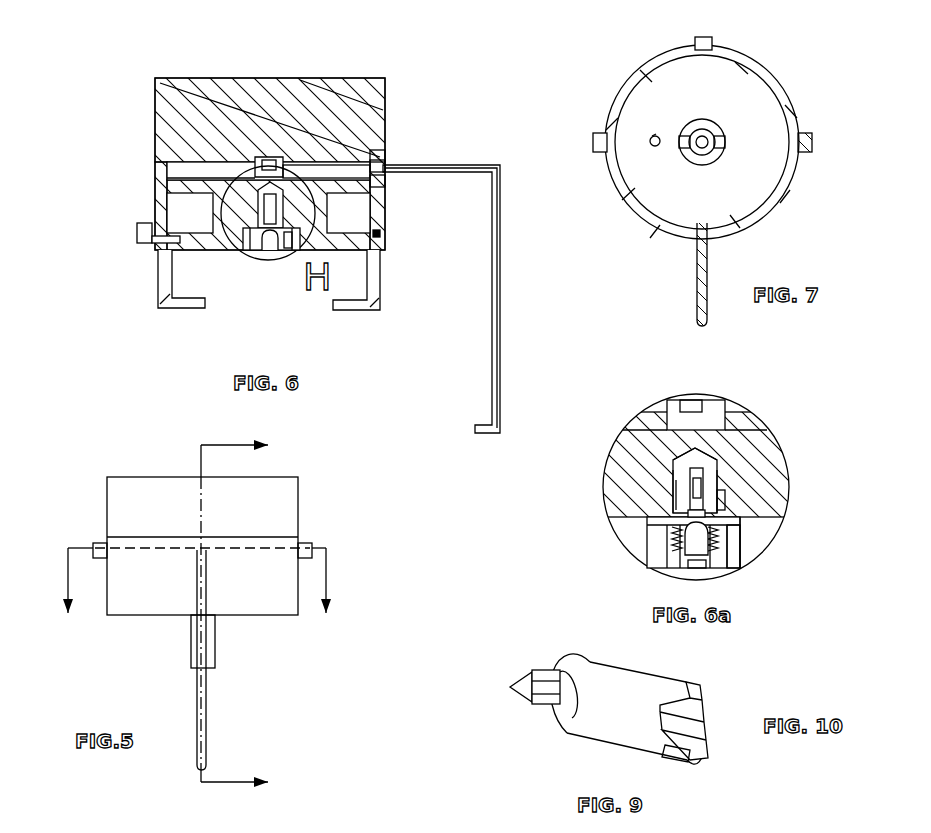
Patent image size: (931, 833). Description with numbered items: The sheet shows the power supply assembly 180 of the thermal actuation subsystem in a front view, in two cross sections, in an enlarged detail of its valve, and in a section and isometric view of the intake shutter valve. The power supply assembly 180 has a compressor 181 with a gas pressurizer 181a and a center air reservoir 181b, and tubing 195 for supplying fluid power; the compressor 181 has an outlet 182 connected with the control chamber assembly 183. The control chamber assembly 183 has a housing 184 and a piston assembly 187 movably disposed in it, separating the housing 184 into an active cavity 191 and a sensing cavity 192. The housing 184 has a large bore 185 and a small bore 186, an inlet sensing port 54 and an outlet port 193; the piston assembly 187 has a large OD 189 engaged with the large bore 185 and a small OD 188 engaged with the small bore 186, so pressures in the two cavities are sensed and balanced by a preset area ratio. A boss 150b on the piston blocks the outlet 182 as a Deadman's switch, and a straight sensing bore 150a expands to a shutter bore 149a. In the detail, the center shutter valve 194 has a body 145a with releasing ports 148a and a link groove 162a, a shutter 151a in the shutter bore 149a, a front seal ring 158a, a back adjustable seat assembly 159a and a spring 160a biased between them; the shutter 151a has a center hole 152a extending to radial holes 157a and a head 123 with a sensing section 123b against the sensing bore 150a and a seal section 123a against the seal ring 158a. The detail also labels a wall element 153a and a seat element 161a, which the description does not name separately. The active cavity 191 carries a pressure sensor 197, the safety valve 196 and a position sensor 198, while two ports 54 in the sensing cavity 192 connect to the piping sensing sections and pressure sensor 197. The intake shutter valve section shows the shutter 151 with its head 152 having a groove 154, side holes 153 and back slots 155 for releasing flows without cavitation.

In FIG. 6, the inlet sensing port 54 is at (173, 238).
In FIG. 6a, the head 123 is at (700, 458).
In FIG. 6a, the seal section 123a is at (705, 470).
In FIG. 6a, the sensing section 123b is at (693, 458).
In FIG. 6a, the body 145a is at (746, 550).
In FIG. 6a, the releasing ports 148a is at (724, 565).
In FIG. 6a, the shutter bore 149a is at (676, 495).
In FIG. 6a, the straight pattern sensing bore 150a is at (710, 460).
In FIG. 6, the boss 150b is at (250, 167).
In FIG. 6a, the boss 150b is at (720, 402).
In FIG. 9, the shutter 151 is at (600, 740).
In FIG. 6a, the shutter 151a is at (722, 500).
In FIG. 9, the head 152 is at (545, 705).
In FIG. 6a, the center hole 152a is at (717, 495).
In FIG. 9, the side holes 153 is at (572, 680).
In FIG. 6a, the housing side wall 153a is at (745, 523).
In FIG. 9, the groove 154 is at (540, 688).
In FIG. 9, the back slots 155 is at (673, 752).
In FIG. 6a, the radial holes 157a is at (698, 483).
In FIG. 6a, the front seal ring 158a is at (673, 460).
In FIG. 6a, the back adjustable seat assembly 159a is at (676, 520).
In FIG. 6a, the spring 160a is at (668, 543).
In FIG. 6a, the bottom plate 161a is at (685, 560).
In FIG. 6a, the link groove 162a is at (733, 548).
In FIG. 6, the power supply assembly 180 is at (272, 68).
In FIG. 5, the power supply assembly 180 is at (140, 462).
In FIG. 6, the compressor 181 is at (195, 120).
In FIG. 6, the gas pressurizer 181a is at (187, 95).
In FIG. 6, the center air reservoir 181b is at (352, 105).
In FIG. 6, the outlet 182 is at (268, 158).
In FIG. 6, the control chamber assembly 183 is at (137, 205).
In FIG. 6, the housing 184 is at (158, 255).
In FIG. 6, the large bore 185 is at (168, 178).
In FIG. 6, the small bore 186 is at (212, 235).
In FIG. 6, the piston assembly 187 is at (287, 250).
In FIG. 6, the small OD 188 is at (330, 228).
In FIG. 6, the large OD 189 is at (375, 167).
In FIG. 6, the active cavity 191 is at (337, 172).
In FIG. 6, the sensing cavity 192 is at (345, 218).
In FIG. 6, the outlet port 193 is at (372, 180).
In FIG. 6, the center shutter valve 194 is at (258, 248).
In FIG. 6, the tubing 195 is at (500, 235).
In FIG. 7, the tubing 195 is at (710, 265).
In FIG. 7, the safety valve 196 is at (810, 130).
In FIG. 7, the pressure sensor 197 is at (710, 37).
In FIG. 7, the position sensor 198 is at (653, 130).